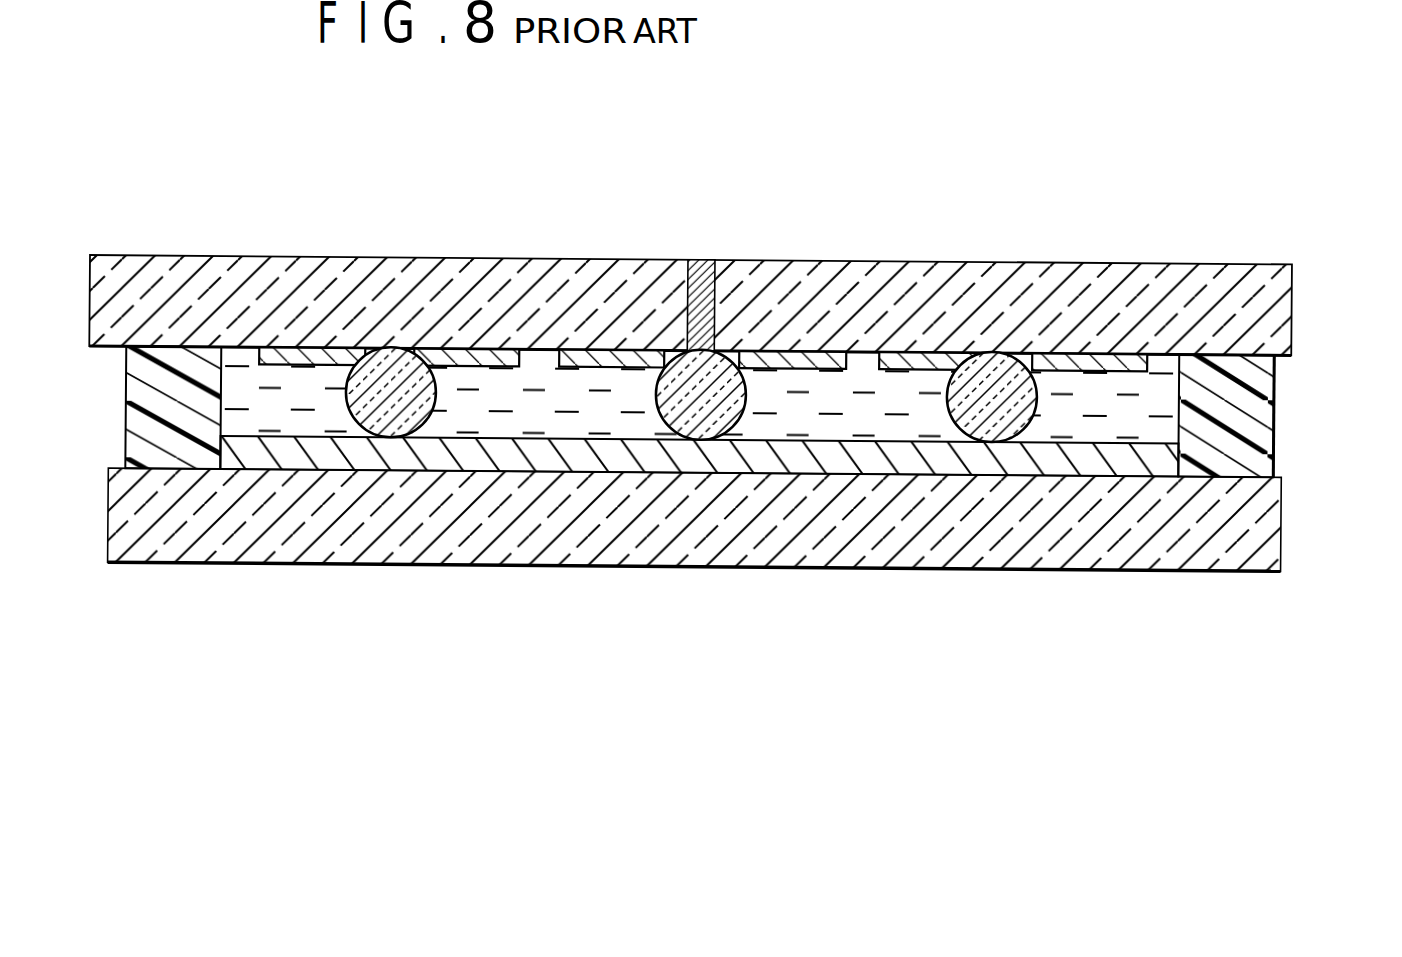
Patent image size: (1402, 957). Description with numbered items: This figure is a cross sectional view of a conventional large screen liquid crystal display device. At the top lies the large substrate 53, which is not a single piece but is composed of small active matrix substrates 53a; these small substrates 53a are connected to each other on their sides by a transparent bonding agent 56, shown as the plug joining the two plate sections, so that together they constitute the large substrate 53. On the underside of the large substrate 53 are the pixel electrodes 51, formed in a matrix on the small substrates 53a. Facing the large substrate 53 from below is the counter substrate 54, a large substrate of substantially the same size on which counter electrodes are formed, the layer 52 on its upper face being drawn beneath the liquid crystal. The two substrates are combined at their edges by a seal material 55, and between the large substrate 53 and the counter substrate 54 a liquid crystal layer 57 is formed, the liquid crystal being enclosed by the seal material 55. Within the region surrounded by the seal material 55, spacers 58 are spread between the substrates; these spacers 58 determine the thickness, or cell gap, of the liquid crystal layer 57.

The pixel electrode 51 is at (917, 356).
The lower electrode layer 52 is at (750, 453).
The large substrate 53 is at (734, 252).
The small substrate 53a is at (228, 273).
The counter substrate 54 is at (1193, 542).
The seal material 55 is at (1245, 422).
The transparent bonding agent 56 is at (706, 272).
The liquid crystal layer 57 is at (887, 425).
The spacer 58 is at (370, 432).